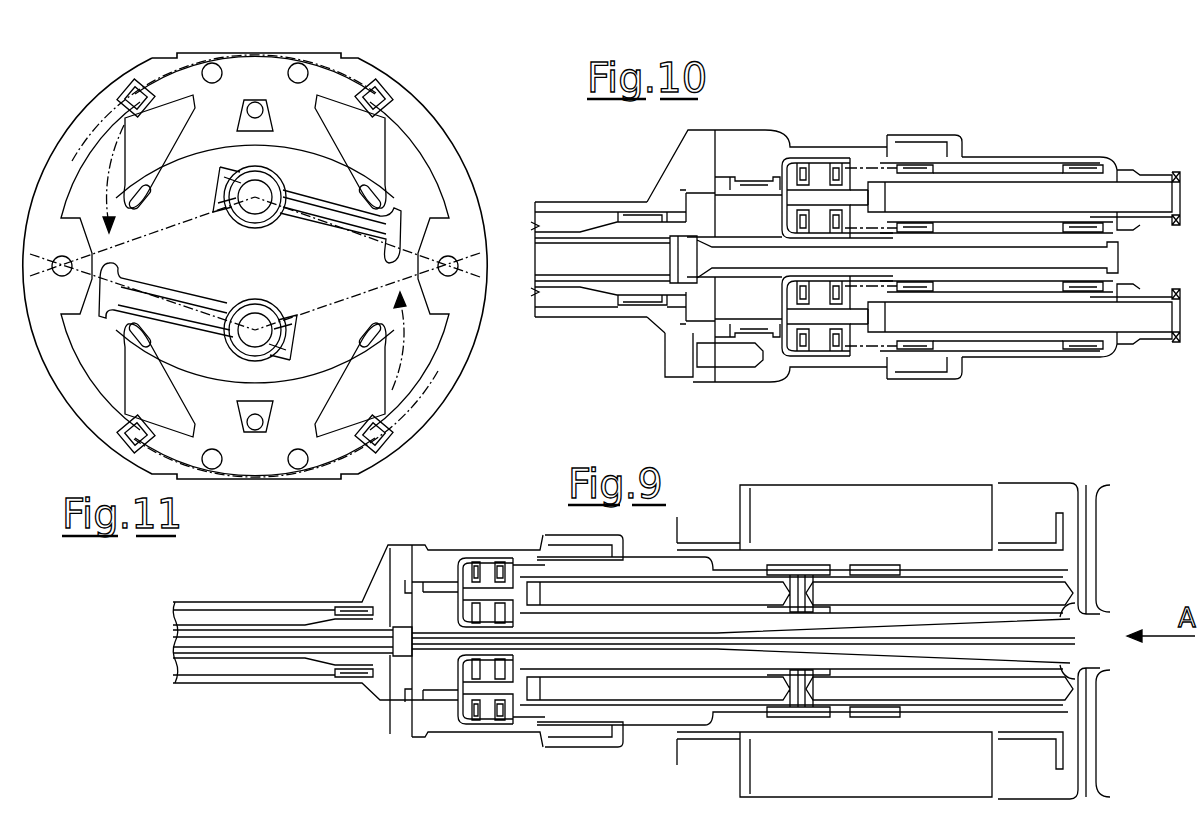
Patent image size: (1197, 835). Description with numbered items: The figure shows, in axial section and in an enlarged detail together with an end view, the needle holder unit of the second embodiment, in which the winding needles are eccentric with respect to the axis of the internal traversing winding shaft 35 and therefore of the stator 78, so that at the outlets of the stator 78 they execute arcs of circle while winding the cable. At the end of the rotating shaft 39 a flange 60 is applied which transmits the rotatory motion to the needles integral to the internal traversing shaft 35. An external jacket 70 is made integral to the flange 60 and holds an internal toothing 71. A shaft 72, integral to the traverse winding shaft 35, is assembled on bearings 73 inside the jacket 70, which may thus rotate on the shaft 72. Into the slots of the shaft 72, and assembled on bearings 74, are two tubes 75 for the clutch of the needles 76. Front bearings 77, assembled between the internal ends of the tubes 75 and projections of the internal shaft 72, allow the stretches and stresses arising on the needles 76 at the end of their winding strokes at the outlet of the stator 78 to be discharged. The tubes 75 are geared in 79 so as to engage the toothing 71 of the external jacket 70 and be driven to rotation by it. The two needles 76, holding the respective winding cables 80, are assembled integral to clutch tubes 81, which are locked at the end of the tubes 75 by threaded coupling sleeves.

In FIG. 10, the internal traversing shaft 35 is at (607, 292).
In FIG. 10, the rotating shaft 39 is at (563, 202).
In FIG. 10, the flange 60 is at (668, 322).
In FIG. 10, the external jacket 70 is at (757, 135).
In FIG. 10, the internal toothing 71 is at (862, 163).
In FIG. 10, the shaft 72 is at (1090, 160).
In FIG. 10, the bearings 73 is at (745, 180).
In FIG. 10, the bearings 74 is at (925, 166).
In FIG. 10, the tubes 75 is at (1150, 176).
In FIG. 11, the needles 76 is at (400, 210).
In FIG. 9, the needles 76 is at (1093, 553).
In FIG. 10, the front bearings 77 is at (803, 162).
In FIG. 11, the stator 78 is at (270, 75).
In FIG. 9, the stator 78 is at (828, 505).
In FIG. 10, the gearing 79 is at (878, 224).
In FIG. 9, the winding cables 80 is at (1095, 622).
In FIG. 9, the clutch tubes 81 is at (952, 572).